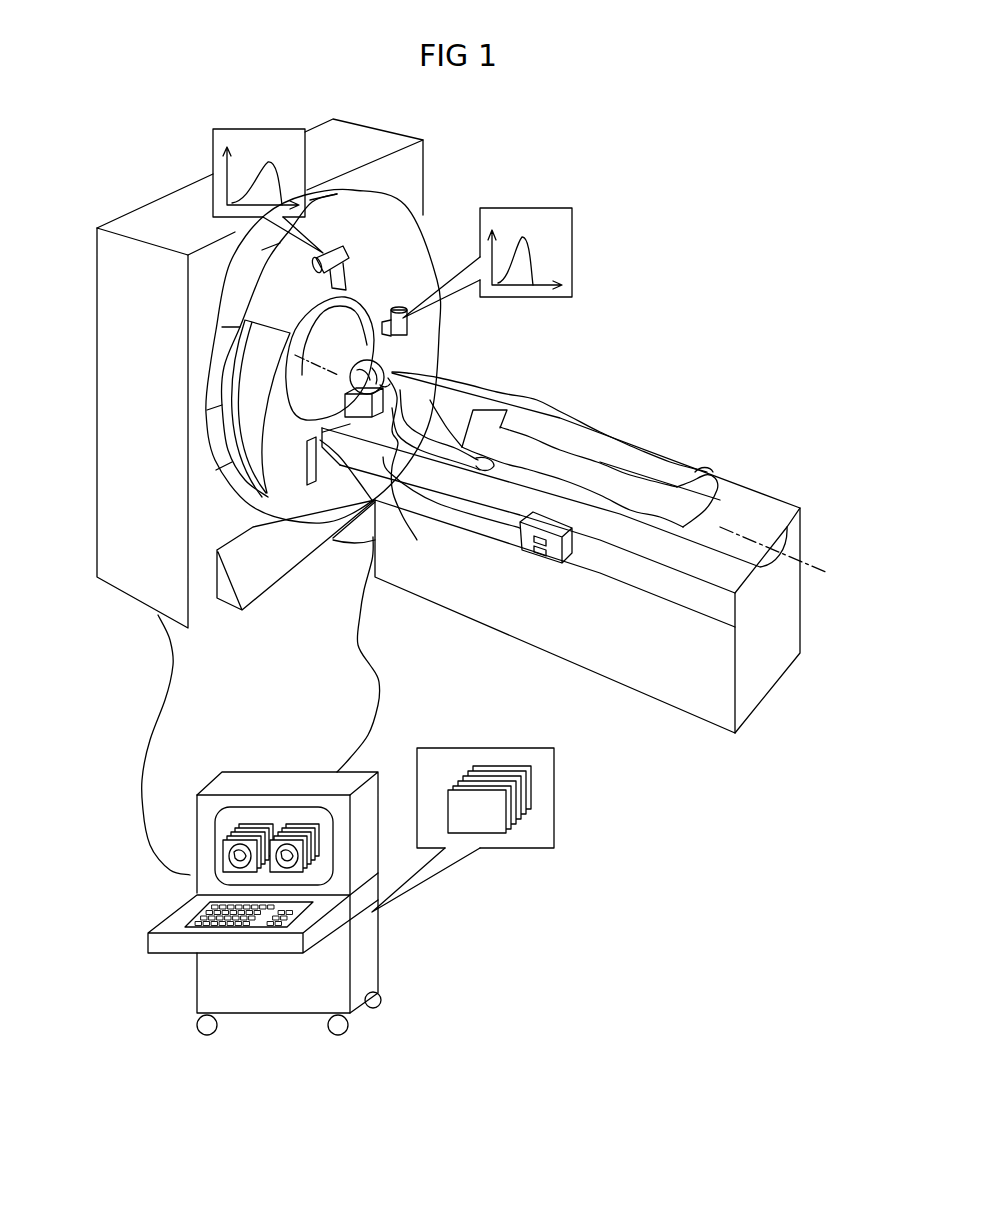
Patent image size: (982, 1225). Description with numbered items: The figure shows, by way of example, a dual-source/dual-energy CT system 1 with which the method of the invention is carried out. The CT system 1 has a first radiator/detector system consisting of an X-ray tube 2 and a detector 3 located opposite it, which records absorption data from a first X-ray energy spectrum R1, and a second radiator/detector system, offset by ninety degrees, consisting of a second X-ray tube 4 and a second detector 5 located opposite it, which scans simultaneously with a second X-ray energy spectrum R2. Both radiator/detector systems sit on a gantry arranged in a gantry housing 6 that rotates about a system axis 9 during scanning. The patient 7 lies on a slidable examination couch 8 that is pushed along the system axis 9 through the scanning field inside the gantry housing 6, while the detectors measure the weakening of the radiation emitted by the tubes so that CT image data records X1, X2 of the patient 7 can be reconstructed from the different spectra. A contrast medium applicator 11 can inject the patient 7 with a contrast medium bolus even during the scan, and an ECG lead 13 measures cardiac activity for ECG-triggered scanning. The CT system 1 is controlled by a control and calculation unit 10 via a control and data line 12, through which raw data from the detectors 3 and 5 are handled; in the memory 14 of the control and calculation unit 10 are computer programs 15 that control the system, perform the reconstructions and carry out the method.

The dual-source/dual-energy CT system 1 is at (672, 182).
The X-ray tube 2 is at (348, 258).
The detector 3 is at (323, 468).
The second X-ray tube 4 is at (408, 333).
The second detector 5 is at (267, 460).
The gantry housing 6 is at (122, 567).
The patient 7 is at (563, 440).
The slidable examination couch 8 is at (692, 693).
The system axis 9 is at (822, 567).
The control and calculation unit 10 is at (370, 953).
The contrast medium applicator 11 is at (548, 565).
The control and data line 12 is at (145, 757).
The ECG lead 13 is at (378, 672).
The memory 14 is at (556, 795).
The computer programs 15 is at (493, 835).
The first X-ray energy spectrum R1 is at (276, 156).
The second X-ray energy spectrum R2 is at (538, 232).
The CT image data record X1 is at (250, 817).
The CT image data record X2 is at (297, 817).